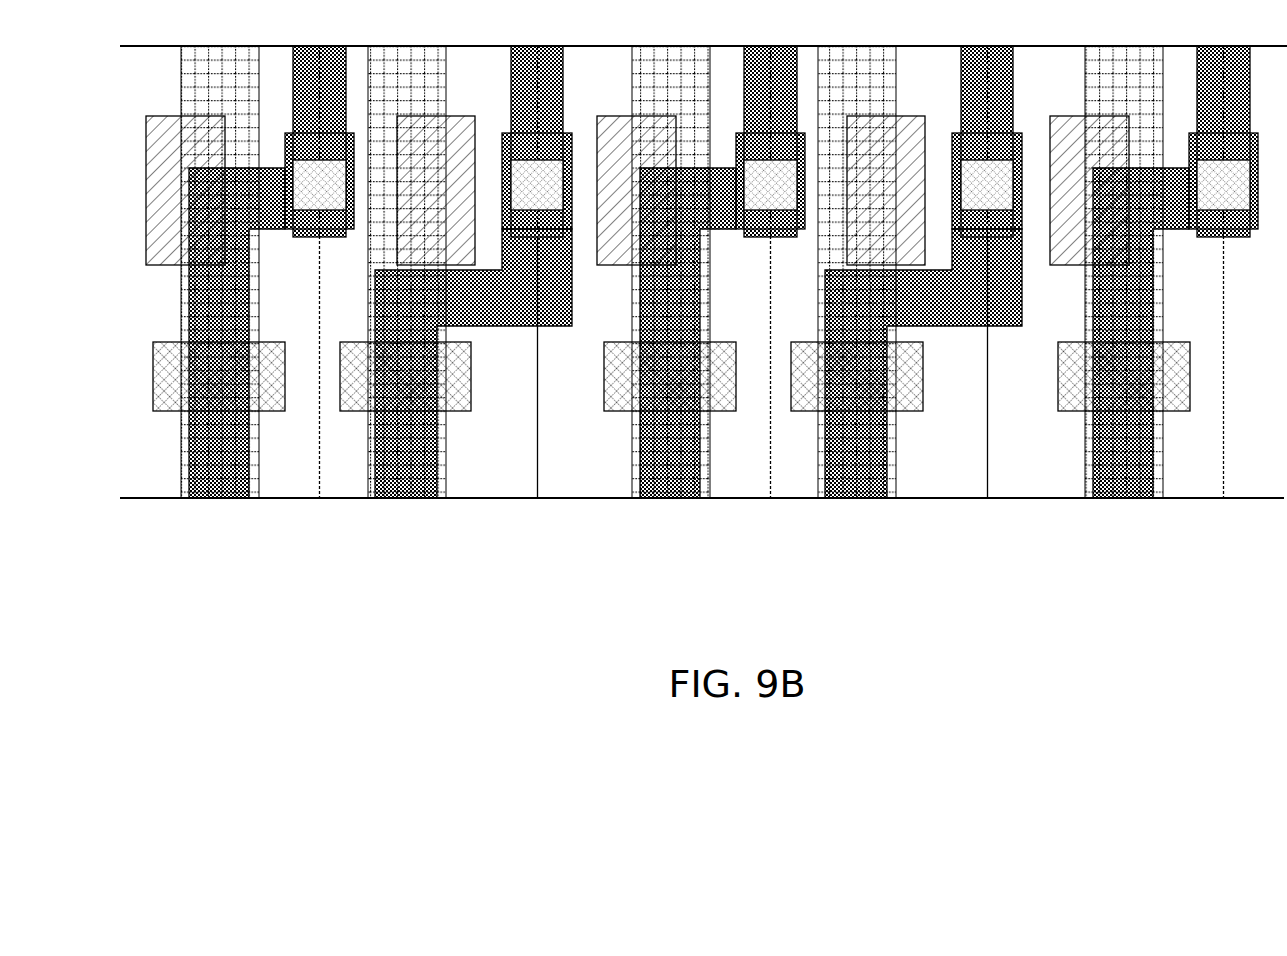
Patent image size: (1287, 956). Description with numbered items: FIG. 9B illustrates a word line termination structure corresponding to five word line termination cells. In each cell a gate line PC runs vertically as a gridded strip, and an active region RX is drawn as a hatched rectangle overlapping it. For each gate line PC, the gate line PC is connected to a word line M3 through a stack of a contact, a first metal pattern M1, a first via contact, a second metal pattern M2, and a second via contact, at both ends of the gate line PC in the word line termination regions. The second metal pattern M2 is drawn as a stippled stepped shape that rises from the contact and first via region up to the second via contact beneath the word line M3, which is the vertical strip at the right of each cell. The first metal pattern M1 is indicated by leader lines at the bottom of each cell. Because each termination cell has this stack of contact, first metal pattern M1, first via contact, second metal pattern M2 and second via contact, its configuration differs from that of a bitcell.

The gate line PC is at (672, 272).
The active region RX is at (637, 190).
The first metal pattern M1 is at (280, 411).
The second metal pattern M2 is at (689, 333).
The word line M3 is at (771, 272).